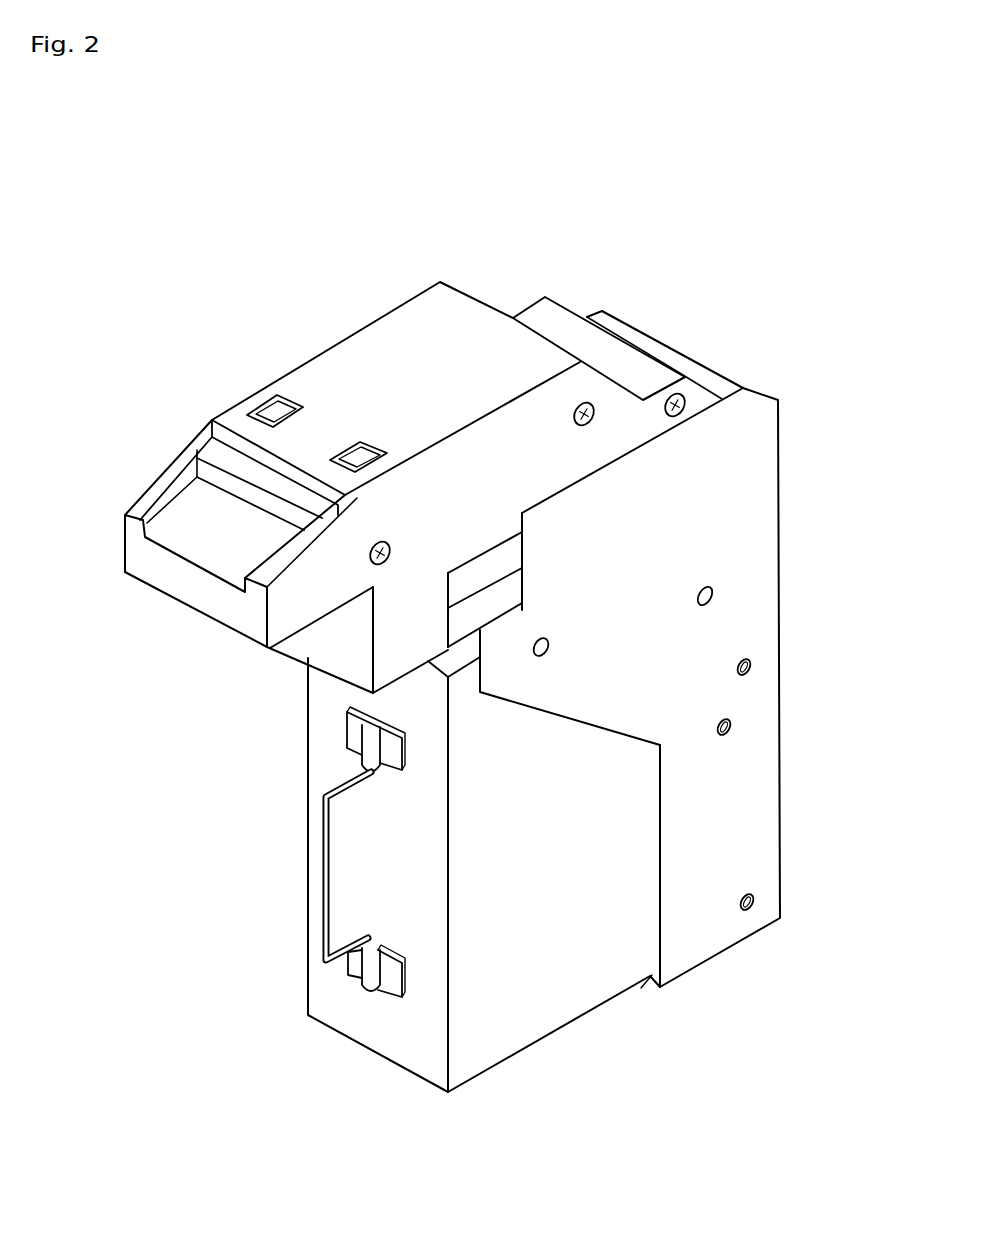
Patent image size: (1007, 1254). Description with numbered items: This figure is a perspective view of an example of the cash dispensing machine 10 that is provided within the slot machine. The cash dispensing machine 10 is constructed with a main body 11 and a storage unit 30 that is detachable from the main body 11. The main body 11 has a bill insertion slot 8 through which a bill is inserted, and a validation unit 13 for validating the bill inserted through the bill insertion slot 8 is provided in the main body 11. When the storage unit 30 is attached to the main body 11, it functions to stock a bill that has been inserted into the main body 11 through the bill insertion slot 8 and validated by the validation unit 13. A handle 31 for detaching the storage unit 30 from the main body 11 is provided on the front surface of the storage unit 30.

The bill insertion slot 8 is at (210, 523).
The cash dispensing machine 10 is at (657, 263).
The main body 11 is at (782, 540).
The validation unit 13 is at (366, 358).
The storage unit 30 is at (565, 1030).
The handle 31 is at (323, 870).